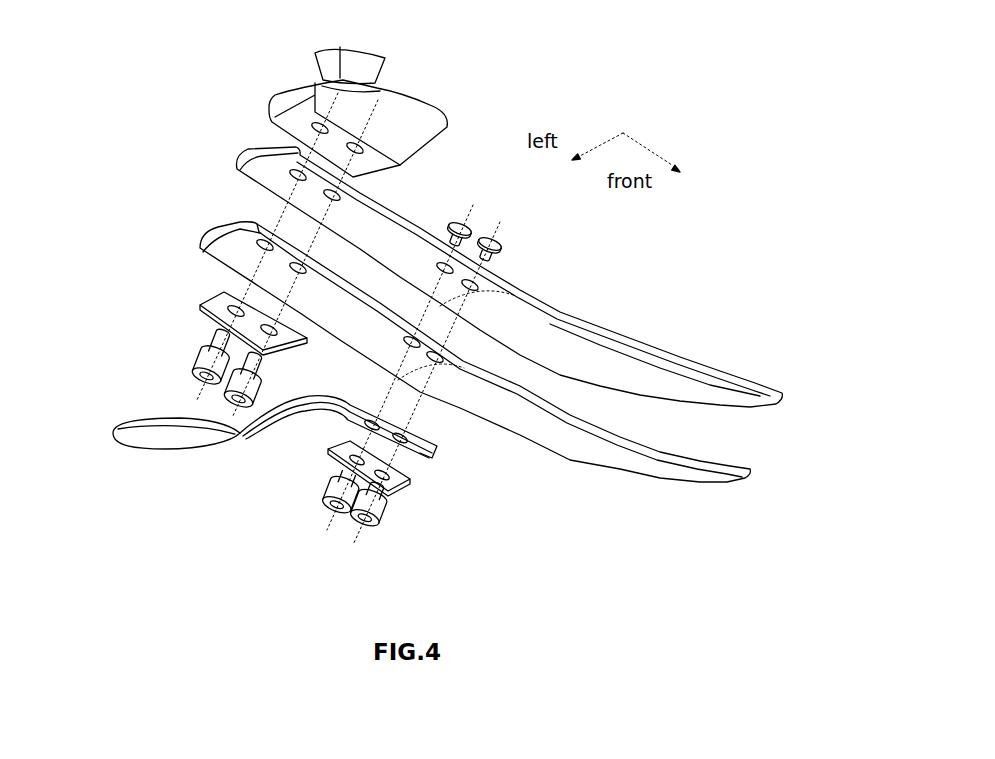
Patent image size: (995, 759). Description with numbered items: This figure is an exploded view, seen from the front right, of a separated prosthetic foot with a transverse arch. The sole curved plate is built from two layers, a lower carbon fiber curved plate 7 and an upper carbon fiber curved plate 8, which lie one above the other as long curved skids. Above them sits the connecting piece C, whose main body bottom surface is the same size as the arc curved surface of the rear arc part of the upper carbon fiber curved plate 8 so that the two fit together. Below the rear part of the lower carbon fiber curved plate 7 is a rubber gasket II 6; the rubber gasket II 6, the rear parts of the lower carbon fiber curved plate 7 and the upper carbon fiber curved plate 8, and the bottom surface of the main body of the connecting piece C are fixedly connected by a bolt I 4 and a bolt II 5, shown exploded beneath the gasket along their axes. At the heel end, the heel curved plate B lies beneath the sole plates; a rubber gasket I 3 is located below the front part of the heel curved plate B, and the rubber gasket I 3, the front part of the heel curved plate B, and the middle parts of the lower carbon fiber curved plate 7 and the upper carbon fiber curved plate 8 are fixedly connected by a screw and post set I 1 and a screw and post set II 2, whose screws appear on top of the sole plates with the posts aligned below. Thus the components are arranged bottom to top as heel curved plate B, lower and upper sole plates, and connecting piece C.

The screw and post set I 1 is at (349, 445).
The screw and post set II 2 is at (515, 296).
The rubber gasket I 3 is at (330, 460).
The bolt I 4 is at (195, 388).
The bolt II 5 is at (212, 336).
The rubber gasket II 6 is at (200, 300).
The lower carbon fiber curved plate 7 is at (233, 238).
The upper carbon fiber curved plate 8 is at (272, 168).
The heel curved plate B is at (240, 433).
The connecting piece C is at (315, 97).